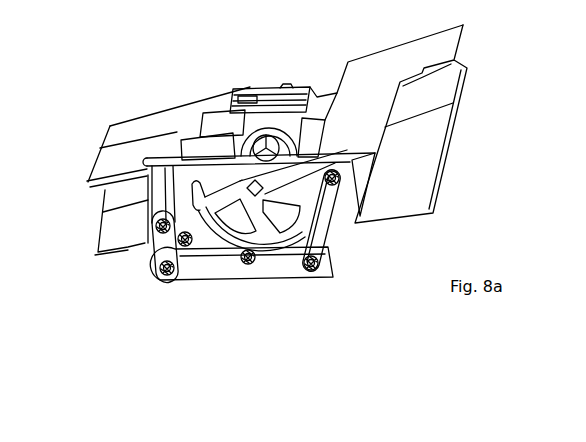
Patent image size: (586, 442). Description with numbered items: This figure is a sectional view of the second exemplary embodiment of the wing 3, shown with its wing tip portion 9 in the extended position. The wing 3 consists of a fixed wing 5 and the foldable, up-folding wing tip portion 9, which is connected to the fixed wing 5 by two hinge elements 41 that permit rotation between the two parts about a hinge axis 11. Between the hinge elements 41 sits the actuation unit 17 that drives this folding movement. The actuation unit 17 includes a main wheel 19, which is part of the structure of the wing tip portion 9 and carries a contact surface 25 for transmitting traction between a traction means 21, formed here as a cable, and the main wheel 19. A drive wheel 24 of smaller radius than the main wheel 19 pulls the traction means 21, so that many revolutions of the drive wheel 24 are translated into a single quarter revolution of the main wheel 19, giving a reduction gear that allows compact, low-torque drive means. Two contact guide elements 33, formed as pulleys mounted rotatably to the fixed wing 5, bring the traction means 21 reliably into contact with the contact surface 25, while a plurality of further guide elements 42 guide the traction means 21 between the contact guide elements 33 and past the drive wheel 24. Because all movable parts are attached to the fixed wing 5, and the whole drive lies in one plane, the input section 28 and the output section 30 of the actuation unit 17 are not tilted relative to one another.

The wing 3 is at (146, 84).
The fixed wing 5 is at (100, 230).
The wing tip portion 9 is at (422, 165).
The hinge axis 11 is at (281, 92).
The actuation unit 17 is at (347, 266).
The main wheel 19 is at (328, 208).
The traction means 21 is at (288, 278).
The drive wheel 24 is at (152, 234).
The contact surface 25 is at (103, 201).
The input section 28 is at (94, 268).
The output section 30 is at (335, 76).
The contact guide elements 33 is at (340, 177).
The hinge elements 41 is at (285, 91).
The further guide elements 42 is at (184, 248).